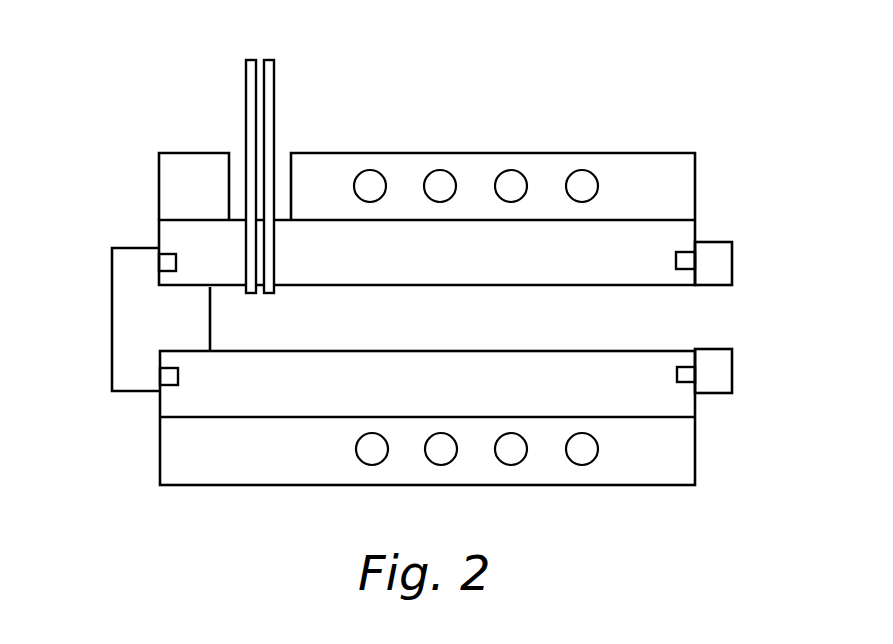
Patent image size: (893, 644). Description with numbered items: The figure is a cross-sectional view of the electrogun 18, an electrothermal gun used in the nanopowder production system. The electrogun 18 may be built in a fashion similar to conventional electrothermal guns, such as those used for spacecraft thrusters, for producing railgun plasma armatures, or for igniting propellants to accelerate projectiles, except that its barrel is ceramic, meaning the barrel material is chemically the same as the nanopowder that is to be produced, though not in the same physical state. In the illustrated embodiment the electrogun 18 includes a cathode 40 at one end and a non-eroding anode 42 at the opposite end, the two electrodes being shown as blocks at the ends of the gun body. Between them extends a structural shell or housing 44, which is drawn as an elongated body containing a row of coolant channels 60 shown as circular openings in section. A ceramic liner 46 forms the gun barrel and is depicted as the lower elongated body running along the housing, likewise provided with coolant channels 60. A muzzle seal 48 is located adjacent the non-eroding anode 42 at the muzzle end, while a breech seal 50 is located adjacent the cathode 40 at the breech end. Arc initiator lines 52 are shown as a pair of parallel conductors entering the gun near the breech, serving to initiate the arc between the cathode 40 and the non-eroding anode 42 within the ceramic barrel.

The electrogun 18 is at (164, 102).
The cathode 40 is at (112, 279).
The non-eroding anode 42 is at (732, 265).
The structural shell or housing 44 is at (514, 153).
The ceramic liner 46 is at (327, 384).
The muzzle seal 48 is at (676, 260).
The breech seal 50 is at (177, 264).
The arc initiator lines 52 is at (275, 100).
The coolant channels 60 is at (232, 418).